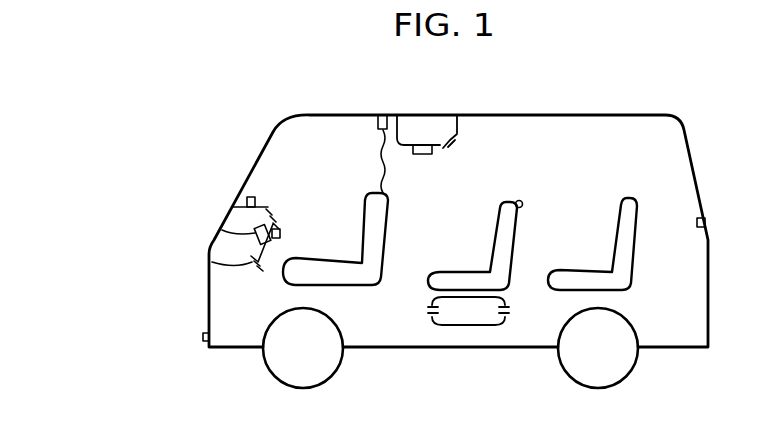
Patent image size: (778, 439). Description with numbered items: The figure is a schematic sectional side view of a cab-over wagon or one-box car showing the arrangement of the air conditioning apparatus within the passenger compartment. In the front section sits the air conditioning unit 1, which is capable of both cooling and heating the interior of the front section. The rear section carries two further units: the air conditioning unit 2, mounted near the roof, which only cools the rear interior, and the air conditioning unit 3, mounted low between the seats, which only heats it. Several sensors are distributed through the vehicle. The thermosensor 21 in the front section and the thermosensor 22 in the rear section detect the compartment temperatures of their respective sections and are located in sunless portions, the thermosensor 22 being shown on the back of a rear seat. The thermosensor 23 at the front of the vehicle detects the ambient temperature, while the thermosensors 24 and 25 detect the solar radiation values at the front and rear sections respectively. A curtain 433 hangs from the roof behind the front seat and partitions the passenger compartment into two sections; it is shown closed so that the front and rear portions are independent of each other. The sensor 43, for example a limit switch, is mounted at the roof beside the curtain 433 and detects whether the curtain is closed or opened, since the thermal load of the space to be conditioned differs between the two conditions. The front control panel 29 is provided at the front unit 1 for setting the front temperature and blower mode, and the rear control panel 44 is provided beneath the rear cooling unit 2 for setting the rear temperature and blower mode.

The air conditioning unit 1 is at (207, 246).
The air conditioning unit 2 is at (440, 115).
The air conditioning unit 3 is at (476, 325).
The thermosensor 21 is at (281, 233).
The thermosensor 22 is at (519, 200).
The thermosensor 23 is at (203, 336).
The thermosensor 24 is at (249, 196).
The thermosensor 25 is at (705, 219).
The front control panel 29 is at (222, 230).
The sensor 43 is at (378, 119).
The rear control panel 44 is at (425, 155).
The curtain 433 is at (381, 165).